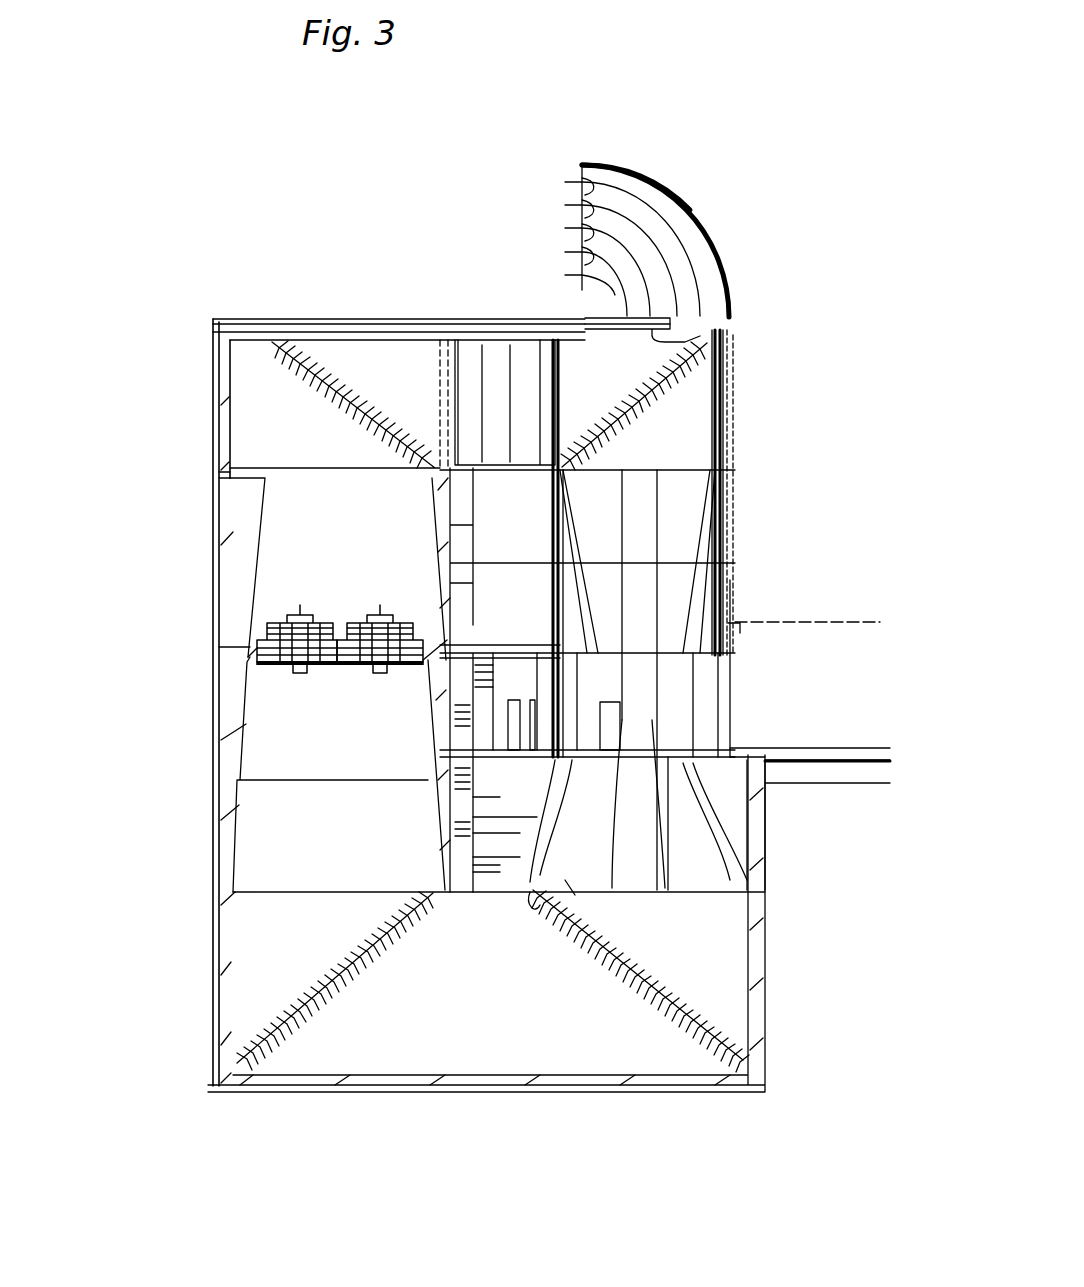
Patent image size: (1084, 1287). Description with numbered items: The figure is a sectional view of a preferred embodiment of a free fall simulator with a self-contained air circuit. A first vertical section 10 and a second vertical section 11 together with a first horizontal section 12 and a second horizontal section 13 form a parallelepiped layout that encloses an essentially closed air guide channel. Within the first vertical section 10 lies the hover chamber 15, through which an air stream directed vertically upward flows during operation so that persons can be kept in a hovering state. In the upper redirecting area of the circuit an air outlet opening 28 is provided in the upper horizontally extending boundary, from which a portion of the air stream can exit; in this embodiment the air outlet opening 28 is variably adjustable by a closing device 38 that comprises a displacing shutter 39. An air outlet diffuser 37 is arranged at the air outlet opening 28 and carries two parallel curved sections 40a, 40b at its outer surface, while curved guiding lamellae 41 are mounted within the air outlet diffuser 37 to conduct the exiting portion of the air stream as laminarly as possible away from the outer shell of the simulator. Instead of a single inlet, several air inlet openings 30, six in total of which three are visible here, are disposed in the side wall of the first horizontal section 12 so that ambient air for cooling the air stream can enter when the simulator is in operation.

The first vertical section 10 is at (758, 547).
The second vertical section 11 is at (166, 683).
The first horizontal section 12 is at (343, 284).
The second horizontal section 13 is at (504, 1115).
The hover chamber 15 is at (665, 722).
The air outlet opening 28 is at (697, 322).
The air inlet opening 30 is at (510, 345).
The air outlet diffuser 37 is at (662, 190).
The closing device 38 is at (720, 328).
The displacing shutter 39 is at (600, 318).
The first curved section 40a is at (710, 226).
The second curved section 40b is at (603, 315).
The curved guiding lamellae 41 is at (605, 292).